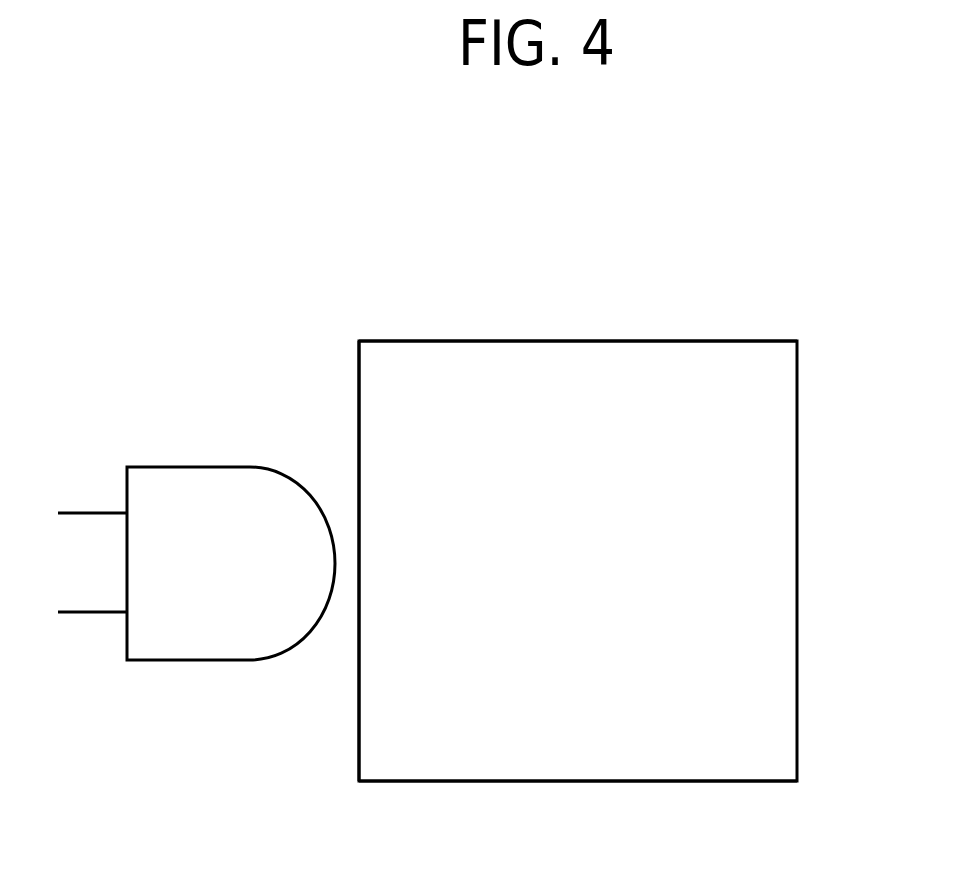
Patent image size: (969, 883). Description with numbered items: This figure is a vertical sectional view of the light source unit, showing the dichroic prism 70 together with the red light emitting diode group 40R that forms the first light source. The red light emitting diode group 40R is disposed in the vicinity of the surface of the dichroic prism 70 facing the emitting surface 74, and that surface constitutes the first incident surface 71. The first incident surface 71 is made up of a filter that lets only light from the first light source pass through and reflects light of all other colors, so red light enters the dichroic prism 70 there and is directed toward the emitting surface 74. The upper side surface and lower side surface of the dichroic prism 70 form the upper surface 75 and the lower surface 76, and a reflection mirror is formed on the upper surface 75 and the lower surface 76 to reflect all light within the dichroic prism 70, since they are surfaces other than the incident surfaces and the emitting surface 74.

The dichroic prism 70 is at (294, 269).
The red light emitting diode group 40R is at (177, 648).
The emitting surface 74 is at (797, 410).
The upper surface 75 is at (437, 341).
The lower surface 76 is at (733, 790).
The first incident surface 71 is at (359, 720).